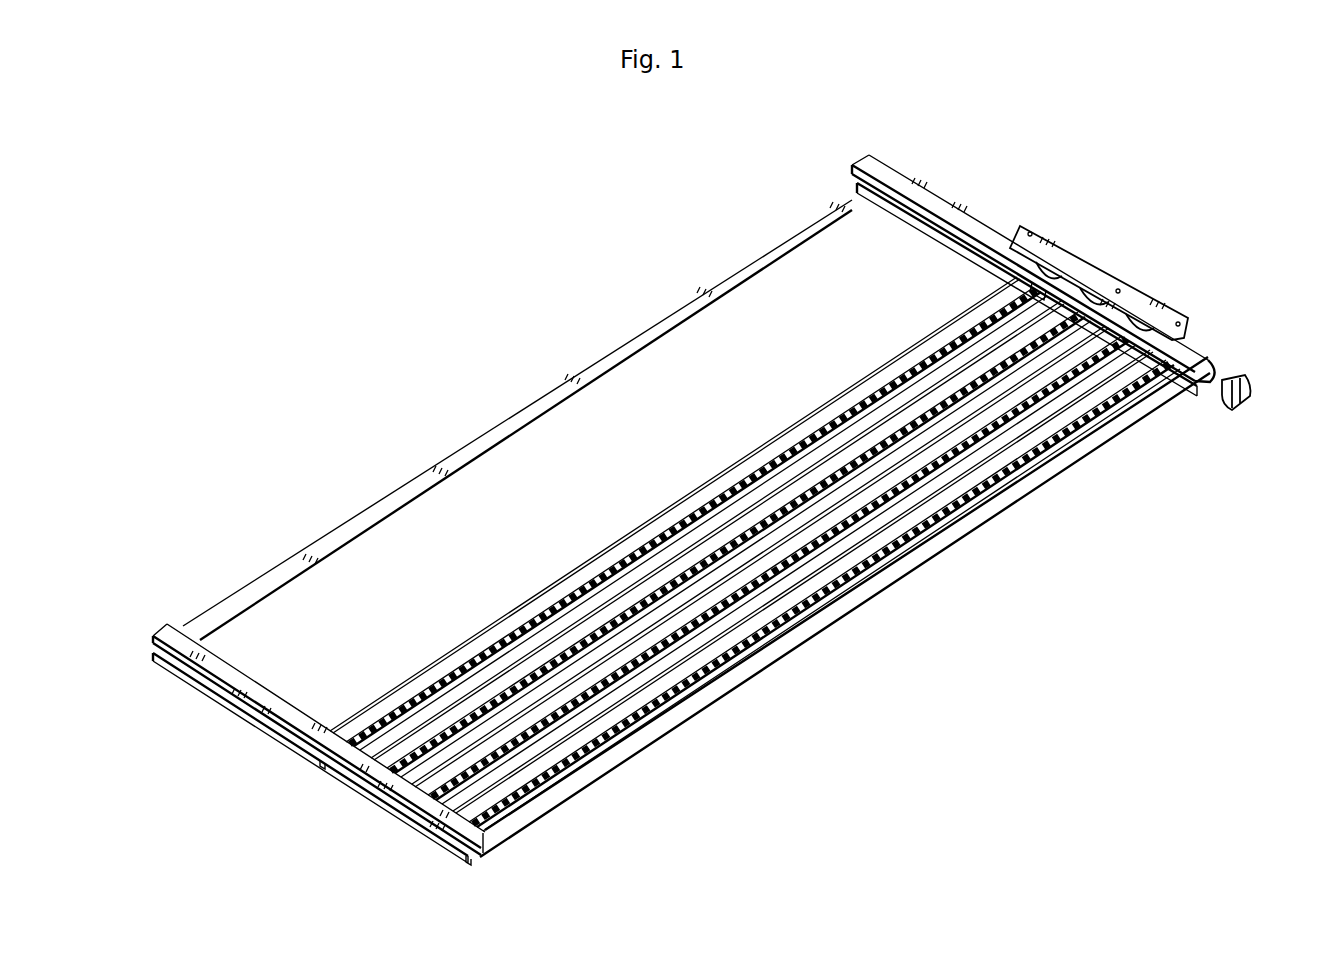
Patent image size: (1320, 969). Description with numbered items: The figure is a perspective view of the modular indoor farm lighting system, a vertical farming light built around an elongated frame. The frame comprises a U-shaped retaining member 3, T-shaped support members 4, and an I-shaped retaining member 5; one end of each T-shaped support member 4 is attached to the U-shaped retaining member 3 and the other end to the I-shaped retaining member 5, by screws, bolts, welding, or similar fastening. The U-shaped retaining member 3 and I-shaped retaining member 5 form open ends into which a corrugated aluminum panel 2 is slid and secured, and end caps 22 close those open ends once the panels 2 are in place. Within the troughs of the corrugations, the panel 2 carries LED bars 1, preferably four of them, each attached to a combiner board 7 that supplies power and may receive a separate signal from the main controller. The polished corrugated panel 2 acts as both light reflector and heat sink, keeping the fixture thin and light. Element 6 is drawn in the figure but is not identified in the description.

The LED bar 1 is at (920, 530).
The corrugated aluminum panel 2 is at (680, 665).
The U-shaped retaining member 3 is at (896, 170).
The T-shaped support member 4 is at (560, 385).
The I-shaped retaining member 5 is at (458, 836).
The bracket 6 is at (1092, 273).
The combiner board 7 is at (1030, 287).
The end cap 22 is at (1246, 390).